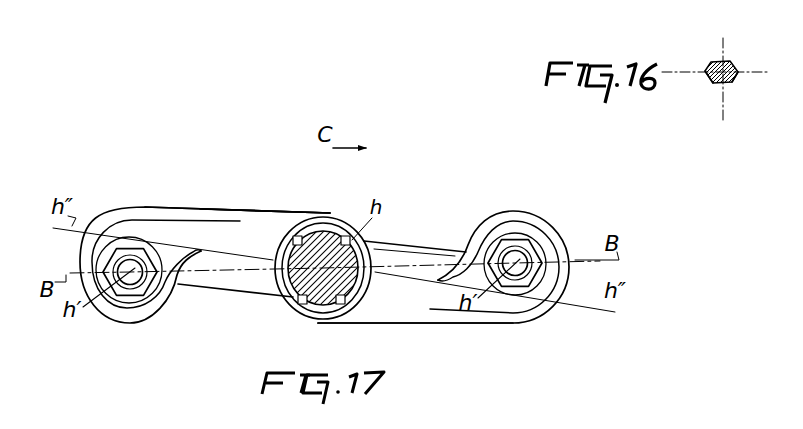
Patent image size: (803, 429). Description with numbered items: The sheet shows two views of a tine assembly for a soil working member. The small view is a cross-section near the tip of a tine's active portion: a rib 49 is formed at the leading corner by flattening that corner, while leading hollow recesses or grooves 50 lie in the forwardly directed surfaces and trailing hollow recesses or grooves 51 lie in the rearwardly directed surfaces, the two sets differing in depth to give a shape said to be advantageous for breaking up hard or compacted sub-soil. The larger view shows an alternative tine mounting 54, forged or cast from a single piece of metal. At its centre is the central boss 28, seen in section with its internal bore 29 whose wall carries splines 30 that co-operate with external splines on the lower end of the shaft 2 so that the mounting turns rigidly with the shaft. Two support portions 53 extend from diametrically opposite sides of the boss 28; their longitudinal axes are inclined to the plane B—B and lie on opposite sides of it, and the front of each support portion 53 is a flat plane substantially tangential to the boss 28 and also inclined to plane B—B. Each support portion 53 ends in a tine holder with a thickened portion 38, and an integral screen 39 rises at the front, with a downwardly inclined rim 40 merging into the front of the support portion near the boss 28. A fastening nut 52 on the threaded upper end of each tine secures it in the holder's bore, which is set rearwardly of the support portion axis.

In FIG. 17, the shaft 2 is at (338, 283).
In FIG. 17, the central boss 28 is at (325, 217).
In FIG. 17, the internal bore 29 is at (312, 238).
In FIG. 17, the splines 30 is at (295, 305).
In FIG. 17, the thickened portion 38 is at (79, 251).
In FIG. 17, the screen 39 is at (138, 206).
In FIG. 17, the downwardly inclined rim 40 is at (194, 207).
In FIG. 16, the rib 49 is at (708, 66).
In FIG. 16, the leading hollow recesses or grooves 50 is at (714, 80).
In FIG. 16, the trailing hollow recesses or grooves 51 is at (732, 80).
In FIG. 17, the fastening nut 52 is at (146, 258).
In FIG. 17, the support portions 53 is at (236, 288).
In FIG. 17, the tine mounting 54 is at (256, 205).